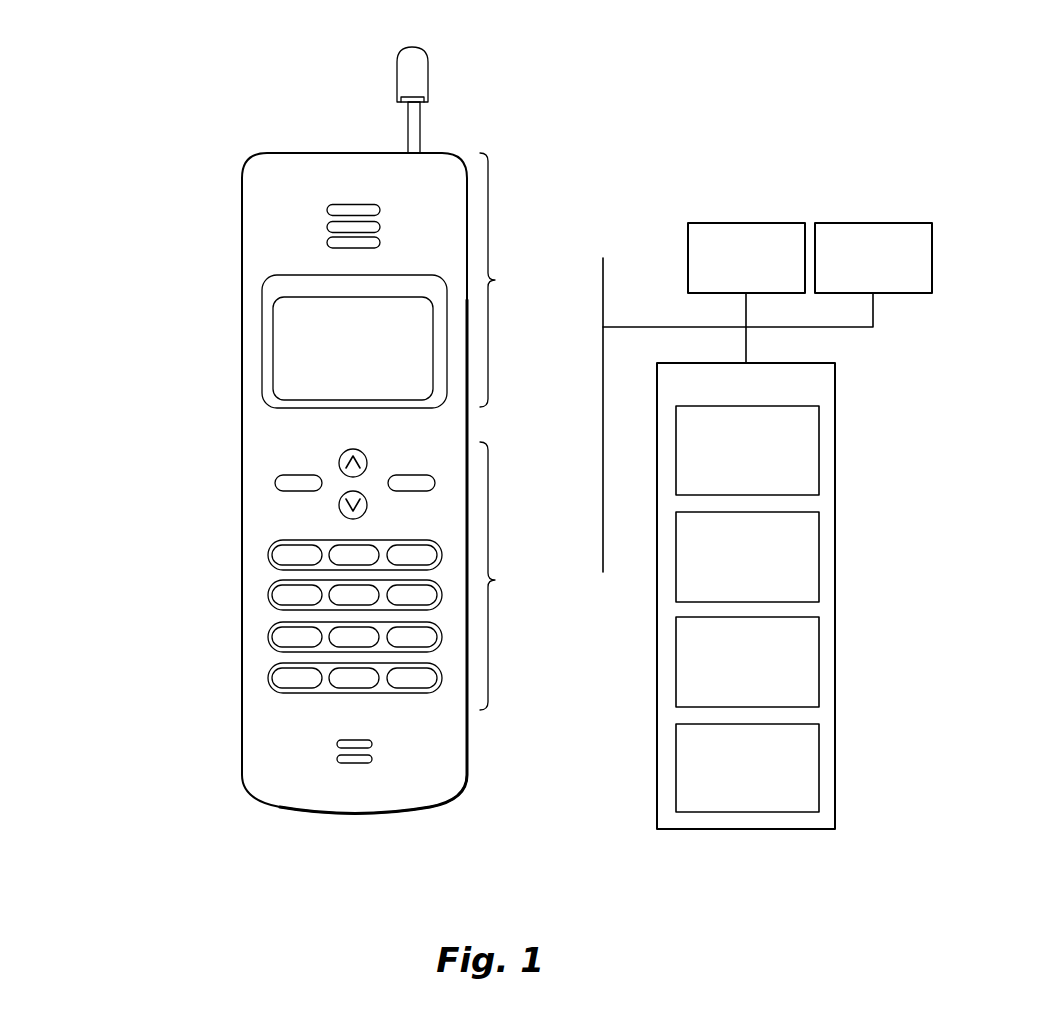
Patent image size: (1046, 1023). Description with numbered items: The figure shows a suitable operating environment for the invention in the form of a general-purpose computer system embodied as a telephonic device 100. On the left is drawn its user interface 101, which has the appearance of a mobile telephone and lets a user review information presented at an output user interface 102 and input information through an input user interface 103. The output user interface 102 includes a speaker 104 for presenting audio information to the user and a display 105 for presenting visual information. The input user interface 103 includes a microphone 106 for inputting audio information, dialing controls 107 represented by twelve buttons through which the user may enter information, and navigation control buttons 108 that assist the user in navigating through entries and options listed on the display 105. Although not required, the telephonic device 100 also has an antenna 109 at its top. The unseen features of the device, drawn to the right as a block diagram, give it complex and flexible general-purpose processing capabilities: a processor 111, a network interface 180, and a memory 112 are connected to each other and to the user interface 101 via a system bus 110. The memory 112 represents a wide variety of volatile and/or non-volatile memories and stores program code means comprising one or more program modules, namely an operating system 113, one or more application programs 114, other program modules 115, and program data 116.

The telephonic device 100 is at (634, 130).
The user interface 101 is at (242, 818).
The output user interface 102 is at (603, 258).
The input user interface 103 is at (603, 572).
The speaker 104 is at (233, 222).
The display 105 is at (233, 352).
The microphone 106 is at (233, 750).
The dialing controls 107 is at (233, 695).
The navigation control buttons 108 is at (233, 477).
The antenna 109 is at (454, 110).
The system bus 110 is at (617, 327).
The processor 111 is at (734, 279).
The memory 112 is at (790, 396).
The operating system 113 is at (735, 479).
The application programs 114 is at (735, 584).
The other program modules 115 is at (735, 689).
The program data 116 is at (735, 795).
The network interface 180 is at (861, 289).